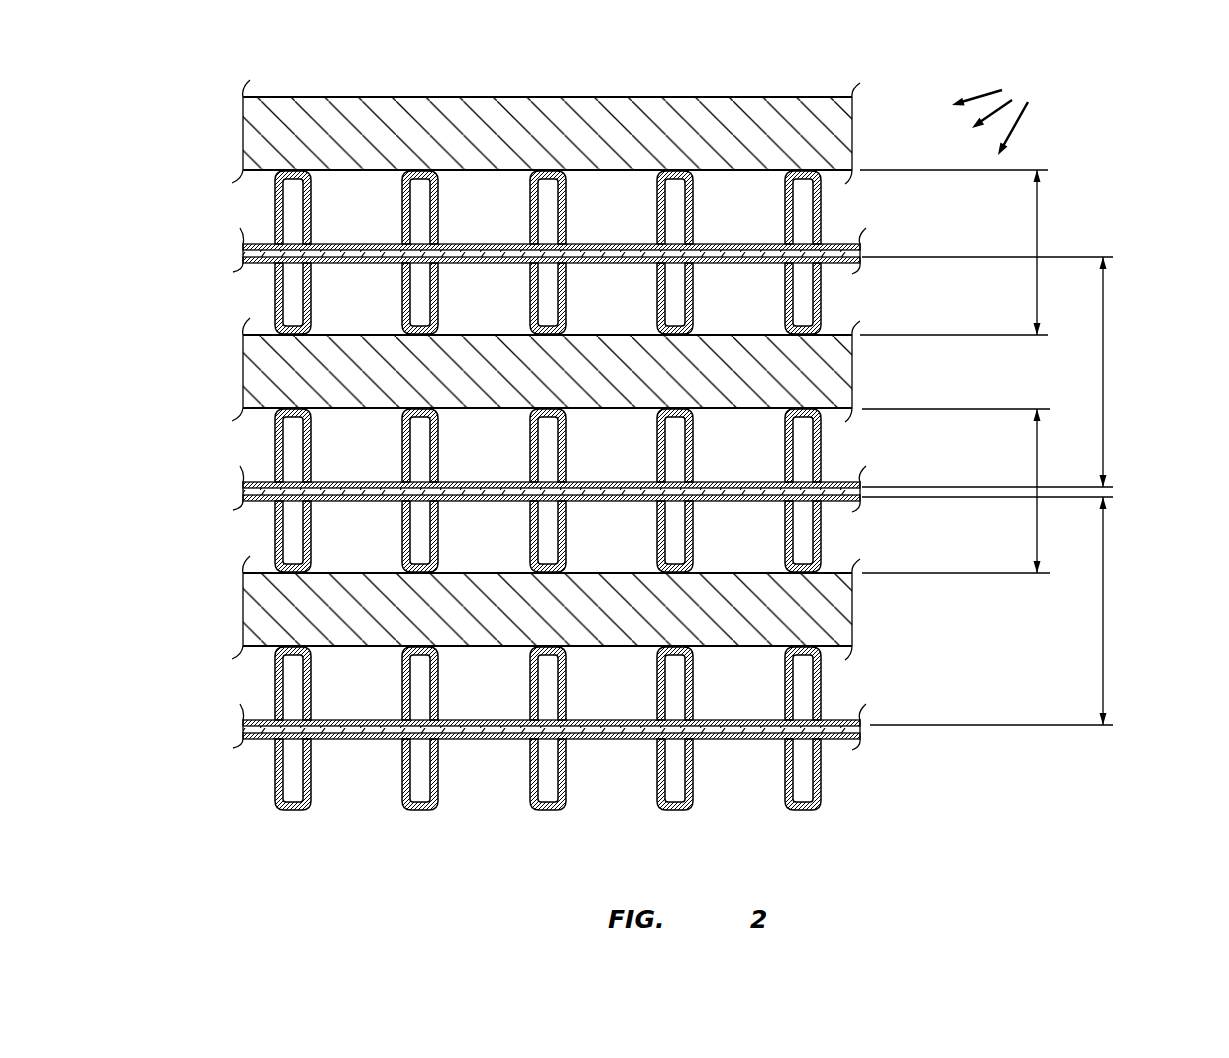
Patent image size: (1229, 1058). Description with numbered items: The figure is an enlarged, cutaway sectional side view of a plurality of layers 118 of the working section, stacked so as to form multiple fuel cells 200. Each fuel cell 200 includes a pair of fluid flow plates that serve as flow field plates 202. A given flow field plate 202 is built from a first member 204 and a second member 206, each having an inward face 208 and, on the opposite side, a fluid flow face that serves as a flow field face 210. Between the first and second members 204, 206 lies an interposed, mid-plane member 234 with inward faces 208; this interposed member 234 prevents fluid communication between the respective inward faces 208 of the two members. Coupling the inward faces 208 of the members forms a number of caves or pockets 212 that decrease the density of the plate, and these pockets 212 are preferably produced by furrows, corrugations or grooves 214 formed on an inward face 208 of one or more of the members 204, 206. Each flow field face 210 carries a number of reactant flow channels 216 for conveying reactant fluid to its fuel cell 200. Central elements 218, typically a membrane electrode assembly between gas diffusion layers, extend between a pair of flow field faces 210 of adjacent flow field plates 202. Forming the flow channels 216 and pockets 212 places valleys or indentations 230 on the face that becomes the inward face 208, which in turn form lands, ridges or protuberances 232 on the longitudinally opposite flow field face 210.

The layers 118 is at (1009, 112).
The fuel cell 200 is at (1103, 380).
The flow field plate 202 is at (1038, 200).
The first member 204 is at (855, 250).
The second member 206 is at (858, 260).
The inward face 208 is at (818, 456).
The flow field face 210 is at (821, 437).
The pockets 212 is at (421, 205).
The grooves 214 is at (662, 444).
The reactant flow channels 216 is at (475, 480).
The central elements 218 is at (267, 372).
The indentations 230 is at (662, 689).
The protuberances 232 is at (532, 687).
The interposed member 234 is at (855, 253).